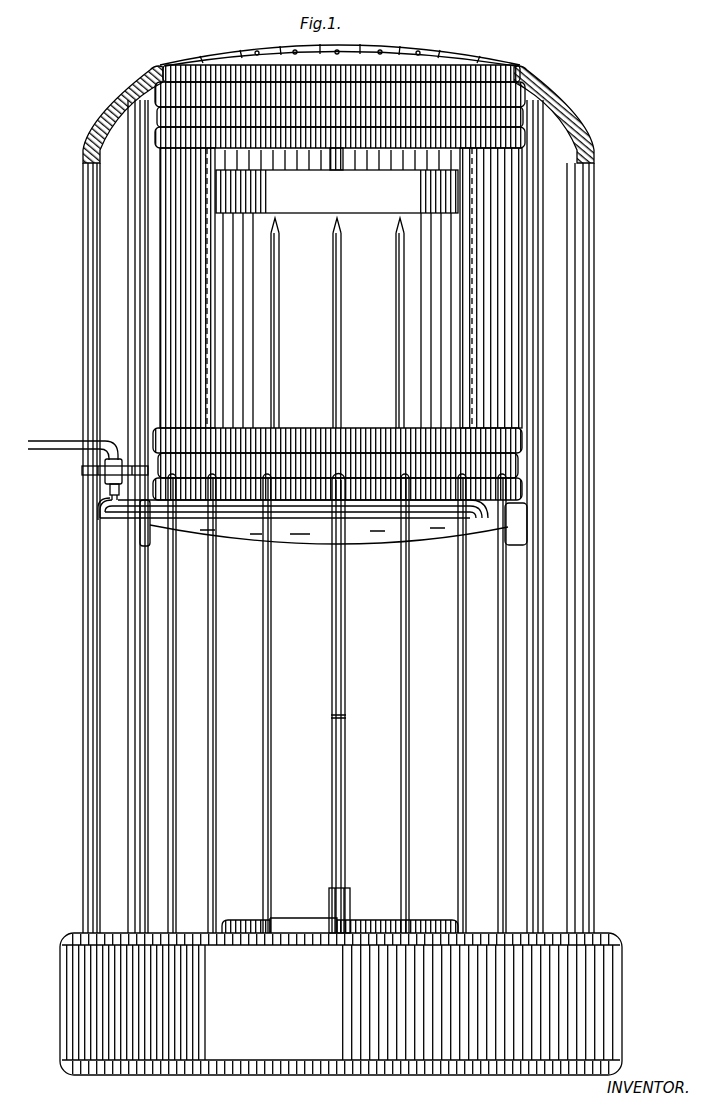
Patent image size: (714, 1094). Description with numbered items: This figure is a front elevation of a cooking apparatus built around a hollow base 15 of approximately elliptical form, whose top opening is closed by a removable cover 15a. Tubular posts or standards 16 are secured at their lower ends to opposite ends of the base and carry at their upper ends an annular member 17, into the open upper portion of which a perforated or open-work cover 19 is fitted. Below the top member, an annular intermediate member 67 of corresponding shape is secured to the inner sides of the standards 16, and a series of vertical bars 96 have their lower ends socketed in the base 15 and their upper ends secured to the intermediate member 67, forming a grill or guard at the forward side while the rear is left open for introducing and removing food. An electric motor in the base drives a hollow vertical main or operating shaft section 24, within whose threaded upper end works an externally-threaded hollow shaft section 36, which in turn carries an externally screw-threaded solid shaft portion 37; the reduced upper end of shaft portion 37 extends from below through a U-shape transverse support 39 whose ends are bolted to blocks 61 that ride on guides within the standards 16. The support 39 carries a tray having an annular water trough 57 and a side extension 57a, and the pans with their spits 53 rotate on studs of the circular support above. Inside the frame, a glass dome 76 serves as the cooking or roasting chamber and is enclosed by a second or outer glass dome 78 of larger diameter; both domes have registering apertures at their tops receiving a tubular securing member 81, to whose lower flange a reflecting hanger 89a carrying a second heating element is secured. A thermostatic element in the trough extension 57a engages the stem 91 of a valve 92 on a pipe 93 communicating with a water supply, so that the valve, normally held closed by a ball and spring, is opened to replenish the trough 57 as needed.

The hollow base 15 is at (618, 974).
The removable cover 15a is at (247, 910).
The tubular posts or standards 16 is at (95, 585).
The annular member 17 is at (525, 84).
The perforated or open-work cover 19 is at (414, 57).
The hollow vertical main or operating shaft section 24 is at (348, 898).
The externally-threaded hollow shaft section 36 is at (346, 787).
The externally screw-threaded solid shaft portion 37 is at (345, 639).
The U-shape transverse support 39 is at (317, 535).
The spits 53 is at (398, 330).
The annular water trough 57 is at (390, 511).
The extension 57a is at (100, 503).
The blocks 61 is at (143, 540).
The annular intermediate member 67 is at (296, 430).
The glass dome 76 is at (207, 250).
The second or outer glass dome 78 is at (160, 307).
The tubular securing member 81 is at (334, 158).
The reflecting hanger 89a is at (300, 167).
The stem 91 is at (110, 495).
The valve 92 is at (105, 463).
The pipe 93 is at (50, 443).
The vertical bars 96 is at (345, 690).